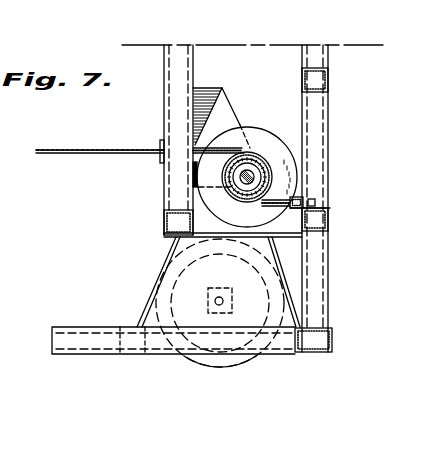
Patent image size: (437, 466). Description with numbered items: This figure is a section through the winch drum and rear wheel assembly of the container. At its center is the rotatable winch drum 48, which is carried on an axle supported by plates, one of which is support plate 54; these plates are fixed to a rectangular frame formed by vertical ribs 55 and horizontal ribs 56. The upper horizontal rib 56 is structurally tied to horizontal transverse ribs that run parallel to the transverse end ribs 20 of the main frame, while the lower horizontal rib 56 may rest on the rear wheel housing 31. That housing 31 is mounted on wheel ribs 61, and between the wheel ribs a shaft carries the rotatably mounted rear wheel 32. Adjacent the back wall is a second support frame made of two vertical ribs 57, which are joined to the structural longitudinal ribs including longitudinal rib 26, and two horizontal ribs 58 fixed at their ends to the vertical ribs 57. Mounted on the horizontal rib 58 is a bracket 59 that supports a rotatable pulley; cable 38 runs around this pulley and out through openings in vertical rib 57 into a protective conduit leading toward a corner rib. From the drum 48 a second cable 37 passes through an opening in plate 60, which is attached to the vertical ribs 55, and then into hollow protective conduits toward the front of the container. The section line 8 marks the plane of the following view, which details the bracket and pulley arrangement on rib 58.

The transverse end rib 20 is at (42, 7).
The section line 8- 8 is at (176, 83).
The longitudinal rib 26 is at (330, 350).
The rear wheel housing 31 is at (148, 294).
The rear wheel 32 is at (232, 300).
The cable 37 is at (118, 141).
The cable 38 is at (267, 198).
The winch drum 48 is at (283, 128).
The support plate 54 is at (224, 107).
The vertical rib 55 is at (182, 45).
The horizontal rib 56 is at (166, 228).
The vertical rib 57 is at (315, 146).
The horizontal rib 58 is at (328, 80).
The bracket 59 is at (296, 200).
The plate 60 is at (161, 161).
The wheel rib 61 is at (273, 352).